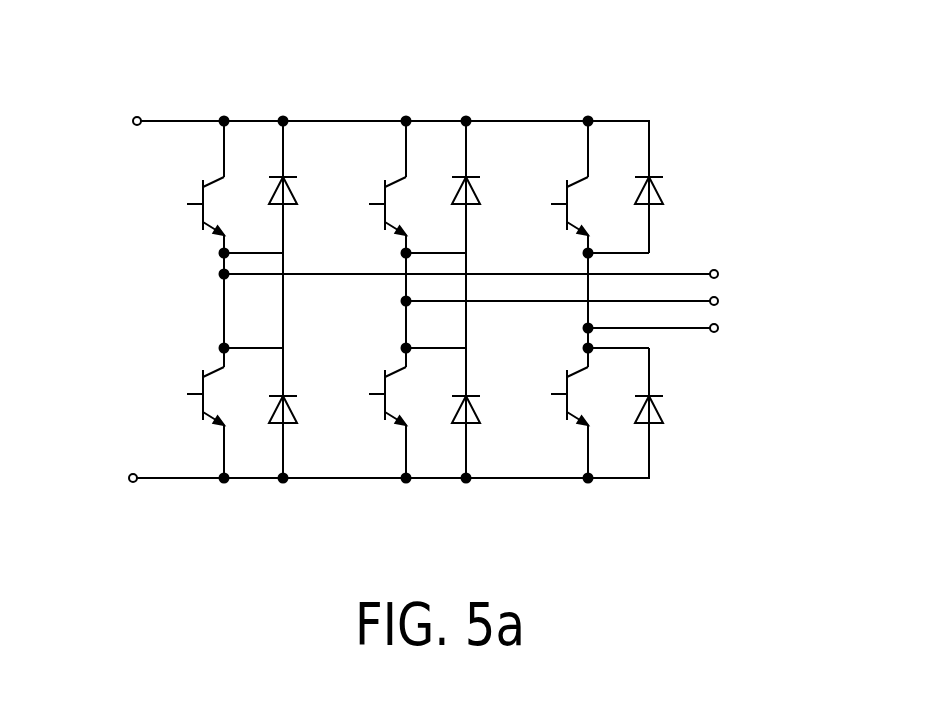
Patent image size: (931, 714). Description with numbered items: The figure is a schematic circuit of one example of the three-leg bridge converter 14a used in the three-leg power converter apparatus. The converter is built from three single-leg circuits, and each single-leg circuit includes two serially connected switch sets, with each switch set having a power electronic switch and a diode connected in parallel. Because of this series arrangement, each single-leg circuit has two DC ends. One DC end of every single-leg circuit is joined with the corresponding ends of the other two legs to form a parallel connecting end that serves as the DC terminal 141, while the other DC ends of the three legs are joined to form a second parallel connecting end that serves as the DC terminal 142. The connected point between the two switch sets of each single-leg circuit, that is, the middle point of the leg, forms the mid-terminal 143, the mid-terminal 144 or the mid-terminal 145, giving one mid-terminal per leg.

The three-leg bridge converter 14a is at (662, 88).
The DC terminal 141 is at (137, 116).
The DC terminal 142 is at (131, 476).
The mid-terminal 143 is at (716, 271).
The mid-terminal 144 is at (718, 301).
The mid-terminal 145 is at (717, 331).